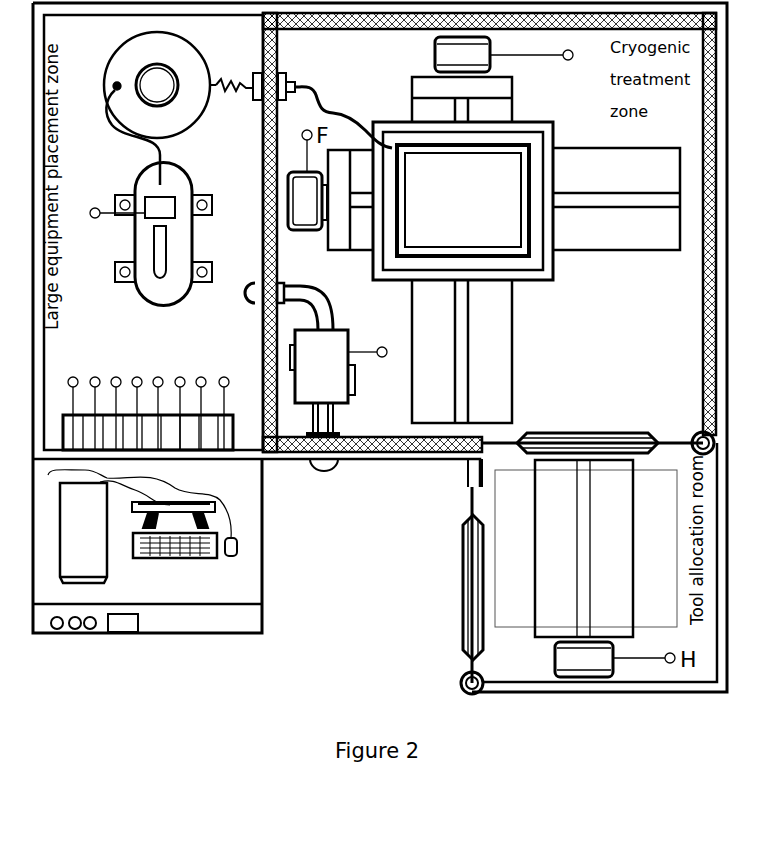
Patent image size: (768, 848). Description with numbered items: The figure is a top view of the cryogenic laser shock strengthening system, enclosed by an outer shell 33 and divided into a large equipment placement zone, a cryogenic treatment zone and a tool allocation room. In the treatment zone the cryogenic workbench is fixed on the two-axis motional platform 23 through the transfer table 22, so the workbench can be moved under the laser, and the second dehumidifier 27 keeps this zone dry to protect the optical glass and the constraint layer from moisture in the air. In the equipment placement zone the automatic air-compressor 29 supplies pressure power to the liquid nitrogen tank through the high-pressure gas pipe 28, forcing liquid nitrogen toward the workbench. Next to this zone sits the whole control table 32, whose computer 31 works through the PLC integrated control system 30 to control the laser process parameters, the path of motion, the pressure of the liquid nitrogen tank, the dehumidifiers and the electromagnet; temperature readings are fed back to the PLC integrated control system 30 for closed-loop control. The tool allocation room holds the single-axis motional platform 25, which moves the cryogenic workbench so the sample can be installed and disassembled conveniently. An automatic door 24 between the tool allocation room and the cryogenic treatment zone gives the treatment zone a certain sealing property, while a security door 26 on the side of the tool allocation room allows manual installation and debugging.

The transfer table 22 is at (553, 121).
The two-axis motional platform 23 is at (590, 251).
The automatic door 24 is at (587, 433).
The single-axis motional platform 25 is at (633, 522).
The security door 26 is at (465, 590).
The second dehumidifier 27 is at (298, 355).
The high-pressure gas pipe 28 is at (118, 145).
The automatic air-compressor 29 is at (118, 237).
The PLC integrated control system 30 is at (175, 452).
The computer 31 is at (65, 510).
The whole control table 32 is at (262, 535).
The outer shell 33 is at (360, 463).